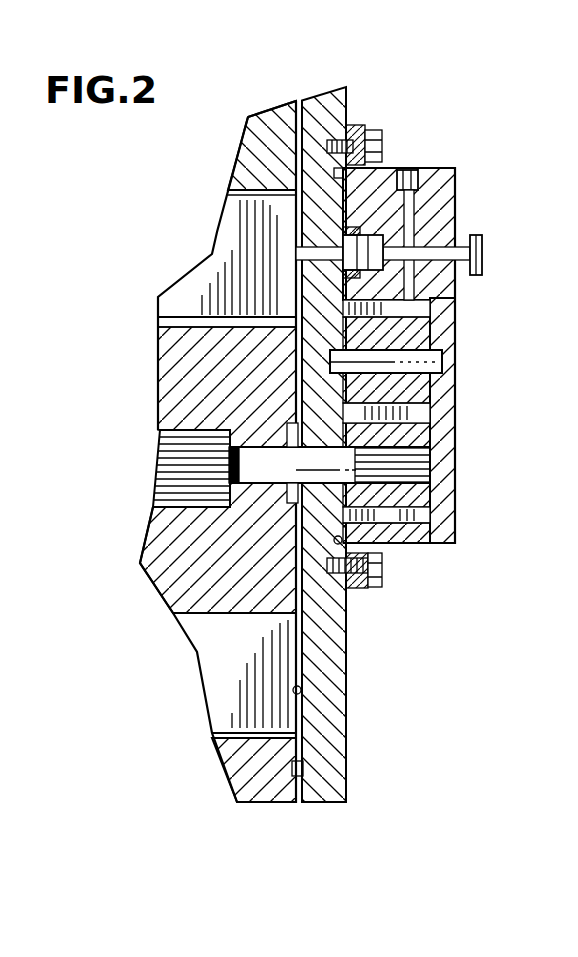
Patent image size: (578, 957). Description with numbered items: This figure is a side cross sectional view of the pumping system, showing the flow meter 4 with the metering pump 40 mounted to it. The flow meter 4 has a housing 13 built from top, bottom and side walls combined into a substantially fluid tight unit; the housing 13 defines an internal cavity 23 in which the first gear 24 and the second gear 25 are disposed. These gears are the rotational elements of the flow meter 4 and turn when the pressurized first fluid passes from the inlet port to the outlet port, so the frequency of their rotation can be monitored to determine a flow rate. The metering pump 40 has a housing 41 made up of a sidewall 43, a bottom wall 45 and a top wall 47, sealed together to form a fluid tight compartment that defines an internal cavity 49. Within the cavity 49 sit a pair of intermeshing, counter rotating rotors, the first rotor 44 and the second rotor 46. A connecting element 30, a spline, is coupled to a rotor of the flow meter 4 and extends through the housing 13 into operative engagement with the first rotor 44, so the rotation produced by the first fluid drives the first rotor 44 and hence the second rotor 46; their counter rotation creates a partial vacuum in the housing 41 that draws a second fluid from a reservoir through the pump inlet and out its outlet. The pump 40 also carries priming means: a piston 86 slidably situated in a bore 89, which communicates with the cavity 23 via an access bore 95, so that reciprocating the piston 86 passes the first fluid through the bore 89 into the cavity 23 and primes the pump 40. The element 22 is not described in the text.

The flow meter 4 is at (192, 745).
The housing 13 is at (337, 603).
The hub body 22 is at (277, 203).
The internal cavity 23 is at (322, 713).
The first gear 24 is at (263, 122).
The second gear 25 is at (330, 650).
The connecting element 30 is at (258, 478).
The metering pump 40 is at (462, 412).
The housing 41 is at (450, 487).
The sidewall 43 is at (418, 542).
The first rotor 44 is at (415, 510).
The bottom wall 45 is at (340, 327).
The second rotor 46 is at (392, 318).
The top wall 47 is at (445, 367).
The internal cavity 49 is at (423, 328).
The piston 86 is at (452, 198).
The bore 89 is at (420, 248).
The access bore 95 is at (298, 250).